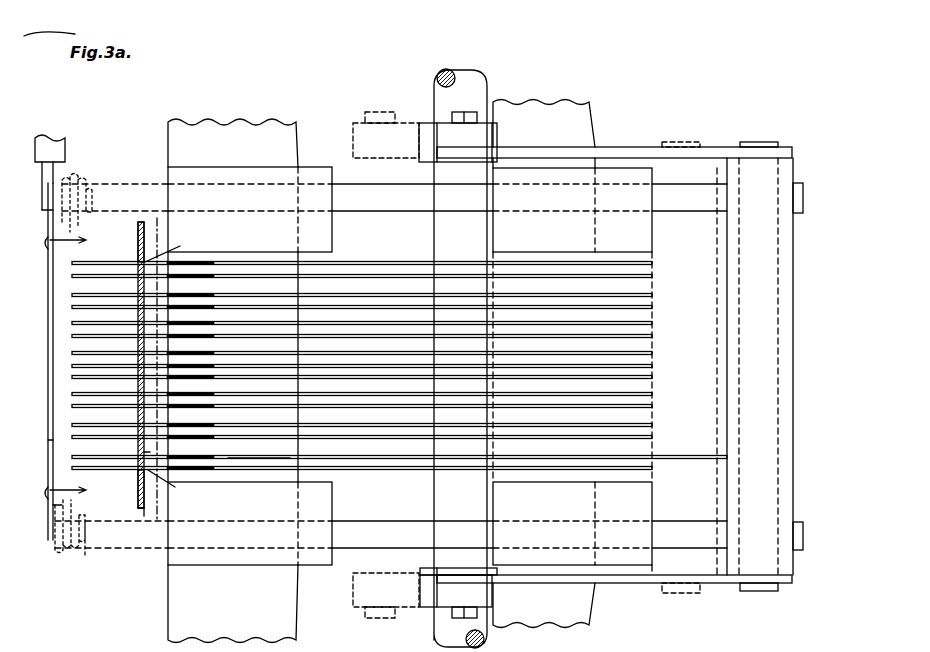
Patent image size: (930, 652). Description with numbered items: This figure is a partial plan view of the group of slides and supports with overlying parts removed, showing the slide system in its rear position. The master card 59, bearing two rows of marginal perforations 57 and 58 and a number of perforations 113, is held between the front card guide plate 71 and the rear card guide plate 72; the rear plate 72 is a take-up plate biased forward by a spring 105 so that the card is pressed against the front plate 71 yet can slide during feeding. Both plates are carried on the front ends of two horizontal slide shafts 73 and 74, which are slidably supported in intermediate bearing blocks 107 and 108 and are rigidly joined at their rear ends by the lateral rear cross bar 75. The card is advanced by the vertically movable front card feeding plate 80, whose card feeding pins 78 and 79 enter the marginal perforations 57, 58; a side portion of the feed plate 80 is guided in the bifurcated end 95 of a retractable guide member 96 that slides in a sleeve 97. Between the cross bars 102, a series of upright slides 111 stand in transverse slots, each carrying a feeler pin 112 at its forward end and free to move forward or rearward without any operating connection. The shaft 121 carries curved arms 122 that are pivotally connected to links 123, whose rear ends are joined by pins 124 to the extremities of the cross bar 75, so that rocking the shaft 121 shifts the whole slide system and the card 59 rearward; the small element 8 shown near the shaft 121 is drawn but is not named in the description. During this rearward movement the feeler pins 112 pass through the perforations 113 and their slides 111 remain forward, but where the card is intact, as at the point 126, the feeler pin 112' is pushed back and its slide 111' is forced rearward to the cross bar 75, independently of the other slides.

The bolt 8 is at (466, 112).
The marginal perforations 57 is at (138, 232).
The marginal perforations 58 is at (138, 490).
The master card 59 is at (145, 512).
The front card guide plate 71 is at (48, 441).
The rear card guide plate 72 is at (74, 510).
The slide shaft 73 is at (378, 212).
The slide shaft 74 is at (385, 522).
The rear cross bar 75 is at (794, 434).
The card feeding pin 78 is at (79, 240).
The card feeding pin 79 is at (81, 488).
The front card feeding plate 80 is at (48, 406).
The bifurcated end 95 is at (42, 211).
The guide member 96 is at (42, 178).
The sleeve 97 is at (48, 134).
The cross bar 102 is at (568, 106).
The spring 105 is at (86, 188).
The intermediate bearing block 107 is at (308, 172).
The intermediate bearing block 108 is at (308, 567).
The slide 111 is at (362, 373).
The slide 111' is at (399, 474).
The feeler pin 112 is at (83, 369).
The feeler pin 112' is at (252, 481).
The perforation 113 is at (176, 366).
The shaft 121 is at (487, 78).
The curved arm 122 is at (426, 128).
The link 123 is at (619, 147).
The pin 124 is at (762, 142).
The intact card point 126 is at (134, 455).